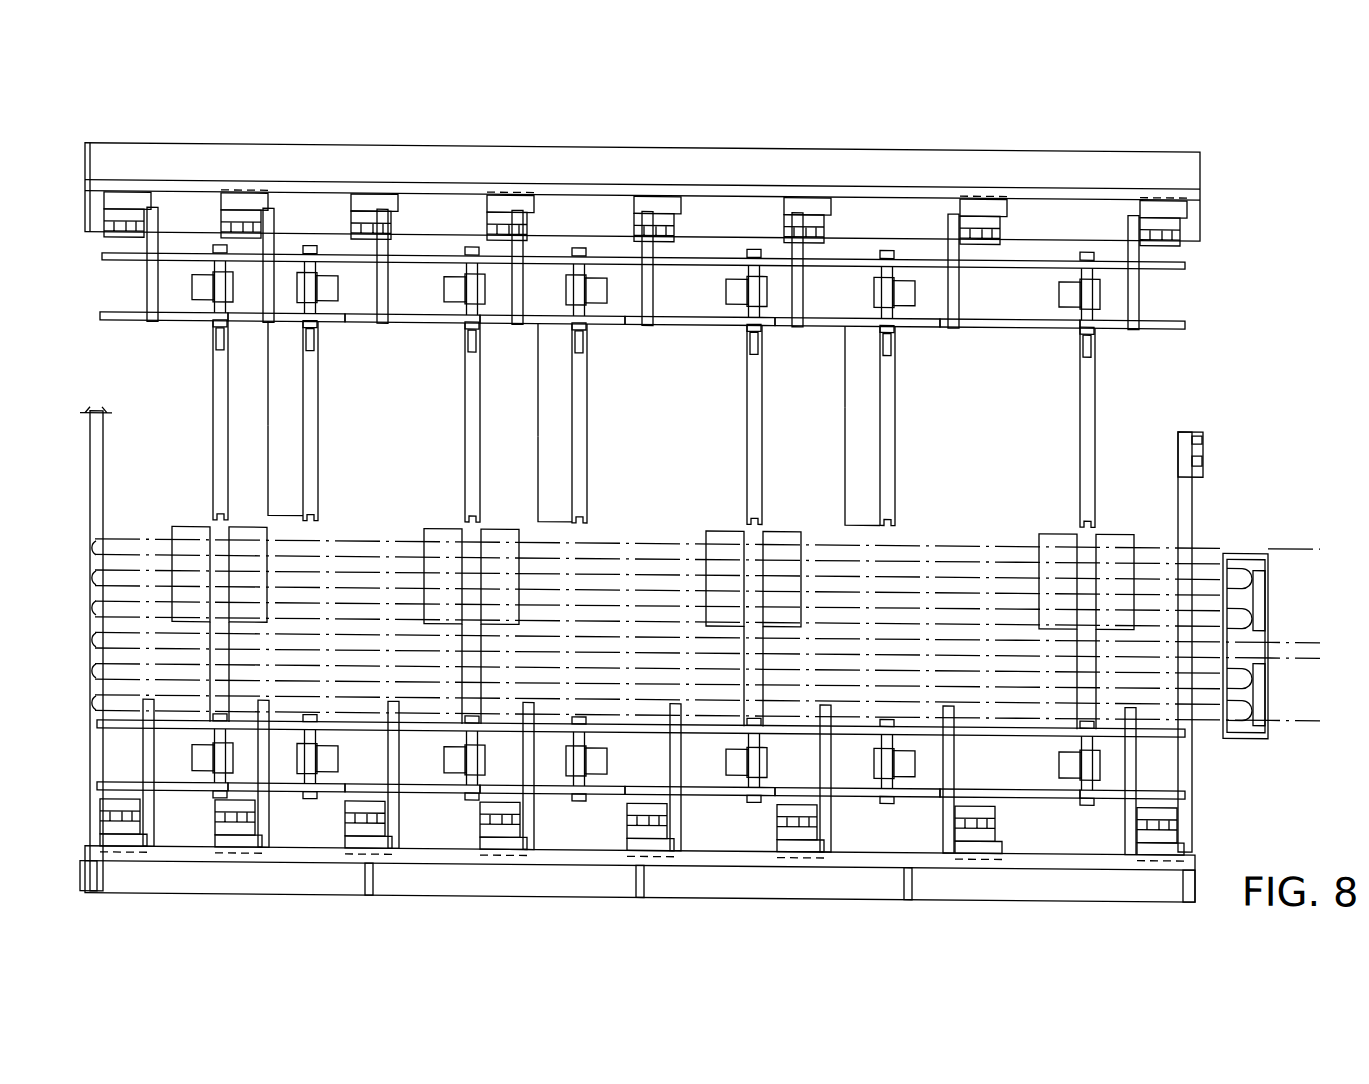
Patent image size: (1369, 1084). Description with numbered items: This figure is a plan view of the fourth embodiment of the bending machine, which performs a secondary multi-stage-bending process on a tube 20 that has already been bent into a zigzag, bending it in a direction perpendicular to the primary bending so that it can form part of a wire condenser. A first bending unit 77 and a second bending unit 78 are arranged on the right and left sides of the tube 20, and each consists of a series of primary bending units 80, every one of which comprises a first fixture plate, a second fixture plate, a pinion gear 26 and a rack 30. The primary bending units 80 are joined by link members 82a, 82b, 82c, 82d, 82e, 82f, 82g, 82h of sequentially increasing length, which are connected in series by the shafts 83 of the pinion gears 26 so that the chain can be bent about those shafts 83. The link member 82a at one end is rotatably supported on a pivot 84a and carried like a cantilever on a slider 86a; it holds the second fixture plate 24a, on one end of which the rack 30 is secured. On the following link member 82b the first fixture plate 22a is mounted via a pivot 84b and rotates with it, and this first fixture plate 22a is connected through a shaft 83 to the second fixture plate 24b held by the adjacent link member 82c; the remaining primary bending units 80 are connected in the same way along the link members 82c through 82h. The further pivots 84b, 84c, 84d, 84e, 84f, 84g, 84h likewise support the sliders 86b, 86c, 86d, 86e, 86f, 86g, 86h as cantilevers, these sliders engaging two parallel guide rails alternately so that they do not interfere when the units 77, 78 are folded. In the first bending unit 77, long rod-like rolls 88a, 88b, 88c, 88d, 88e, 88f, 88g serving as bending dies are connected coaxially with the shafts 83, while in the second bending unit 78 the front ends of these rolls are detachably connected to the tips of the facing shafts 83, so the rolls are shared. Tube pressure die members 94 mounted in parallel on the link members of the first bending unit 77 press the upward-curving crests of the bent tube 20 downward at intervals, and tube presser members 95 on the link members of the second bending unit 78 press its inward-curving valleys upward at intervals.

The tube 20 is at (998, 582).
The first fixture plate 22a is at (240, 270).
The second fixture plate 24a is at (192, 285).
The second fixture plate 24b is at (462, 300).
The pinion gear 26 is at (468, 290).
The rack 30 is at (330, 290).
The first bending unit 77 is at (1221, 217).
The second bending unit 78 is at (1224, 528).
The primary bending unit 80 is at (247, 334).
The link member 82a is at (112, 315).
The link member 82b is at (290, 320).
The link member 82c is at (447, 320).
The link member 82d is at (555, 320).
The link member 82e is at (693, 320).
The link member 82f is at (827, 320).
The link member 82g is at (1020, 320).
The link member 82h is at (1172, 320).
The shaft 83 is at (220, 340).
The pivot 84a is at (150, 268).
The pivot 84b is at (268, 270).
The pivot 84c is at (382, 270).
The pivot 84d is at (518, 270).
The pivot 84e is at (648, 270).
The pivot 84f is at (797, 270).
The pivot 84g is at (953, 270).
The pivot 84h is at (1133, 270).
The slider 86a is at (127, 205).
The slider 86b is at (243, 205).
The slider 86c is at (372, 205).
The slider 86d is at (510, 205).
The slider 86e is at (657, 205).
The slider 86f is at (808, 205).
The slider 86g is at (983, 205).
The slider 86h is at (1163, 205).
The roll 88a is at (213, 445).
The roll 88b is at (318, 452).
The roll 88c is at (480, 450).
The roll 88d is at (587, 440).
The roll 88e is at (760, 440).
The roll 88f is at (893, 450).
The roll 88g is at (1080, 450).
The tube pressure die member 94 is at (320, 500).
The tube presser member 95 is at (176, 530).